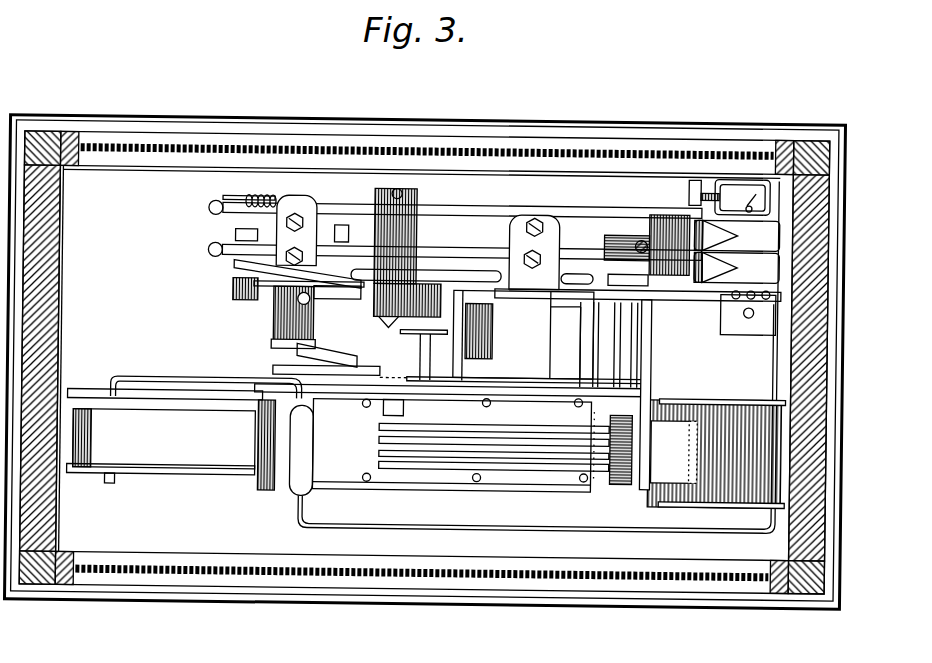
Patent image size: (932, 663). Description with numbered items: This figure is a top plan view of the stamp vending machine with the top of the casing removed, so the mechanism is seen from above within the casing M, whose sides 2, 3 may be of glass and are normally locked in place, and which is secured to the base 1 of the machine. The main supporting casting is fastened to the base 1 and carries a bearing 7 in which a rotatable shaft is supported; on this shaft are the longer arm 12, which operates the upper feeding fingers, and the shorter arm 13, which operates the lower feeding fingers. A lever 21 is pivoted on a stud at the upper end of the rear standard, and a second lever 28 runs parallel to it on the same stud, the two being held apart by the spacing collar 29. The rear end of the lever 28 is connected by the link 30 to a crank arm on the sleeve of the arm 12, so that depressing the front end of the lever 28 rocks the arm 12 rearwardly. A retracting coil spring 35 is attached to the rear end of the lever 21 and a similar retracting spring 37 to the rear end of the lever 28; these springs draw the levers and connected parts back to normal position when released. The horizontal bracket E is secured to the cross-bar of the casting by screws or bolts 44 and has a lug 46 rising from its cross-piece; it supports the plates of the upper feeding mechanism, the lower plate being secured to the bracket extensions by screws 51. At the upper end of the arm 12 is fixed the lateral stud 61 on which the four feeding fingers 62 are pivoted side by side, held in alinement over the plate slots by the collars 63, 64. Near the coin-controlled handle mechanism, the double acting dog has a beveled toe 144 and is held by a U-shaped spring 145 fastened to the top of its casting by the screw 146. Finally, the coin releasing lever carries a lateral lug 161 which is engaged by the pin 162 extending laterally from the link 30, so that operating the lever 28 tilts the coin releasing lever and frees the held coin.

The base 1 is at (524, 526).
The side of the casing 2 is at (638, 150).
The side of the casing 3 is at (573, 578).
The bearing 7 is at (603, 392).
The arm 12 is at (275, 346).
The arm 13 is at (276, 379).
The lever 21 is at (440, 223).
The lever 28 is at (570, 258).
The spacing collar 29 is at (393, 233).
The link 30 is at (280, 296).
The retracting coil spring 35 is at (218, 208).
The retracting spring 37 is at (212, 249).
The screws or bolts 44 is at (479, 272).
The lug 46 is at (638, 400).
The screws 51 is at (533, 368).
The lateral stud 61 is at (383, 488).
The feeding fingers 62 is at (462, 423).
The collar 63 is at (405, 412).
The collar 64 is at (403, 484).
The toe 144 is at (686, 190).
The U-shaped spring 145 is at (763, 200).
The screw 146 is at (742, 198).
The lateral lug 161 is at (338, 230).
The pin 162 is at (322, 280).
The horizontal bracket E is at (530, 372).
The casing M is at (818, 254).